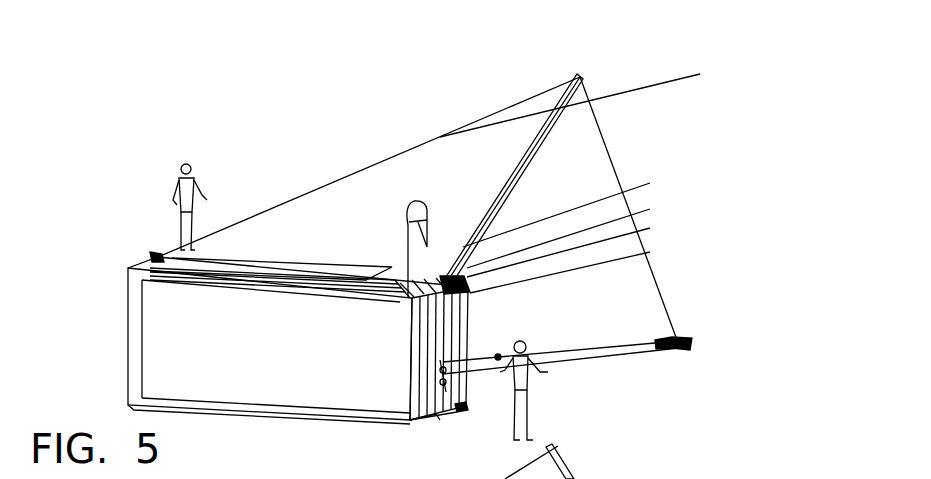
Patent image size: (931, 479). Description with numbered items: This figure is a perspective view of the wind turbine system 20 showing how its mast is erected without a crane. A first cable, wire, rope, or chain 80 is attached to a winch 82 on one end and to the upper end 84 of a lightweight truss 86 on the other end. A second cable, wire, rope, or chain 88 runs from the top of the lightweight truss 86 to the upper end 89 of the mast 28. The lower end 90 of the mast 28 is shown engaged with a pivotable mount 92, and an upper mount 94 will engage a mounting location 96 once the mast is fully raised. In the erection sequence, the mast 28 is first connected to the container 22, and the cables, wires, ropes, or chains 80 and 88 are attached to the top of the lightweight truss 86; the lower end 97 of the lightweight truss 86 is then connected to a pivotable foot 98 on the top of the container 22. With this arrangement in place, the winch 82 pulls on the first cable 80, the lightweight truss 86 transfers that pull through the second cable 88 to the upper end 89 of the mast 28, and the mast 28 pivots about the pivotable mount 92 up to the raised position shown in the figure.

The wind turbine system 20 is at (310, 172).
The container 22 is at (310, 365).
The winch 82 is at (157, 254).
The upper end of lightweight truss 84 is at (580, 77).
The first cable, wire, rope, or chain 80 is at (700, 74).
The second cable, wire, rope, or chain 88 is at (616, 164).
The lightweight truss 86 is at (650, 183).
The lower end of lightweight truss 97 is at (650, 209).
The pivotable foot 98 is at (650, 228).
The mounting location 96 is at (650, 252).
The mast 28 is at (668, 346).
The upper end of mast 89 is at (692, 344).
The pivotable mount 92 is at (447, 362).
The lower end of mast 90 is at (438, 418).
The upper mount 94 is at (497, 360).